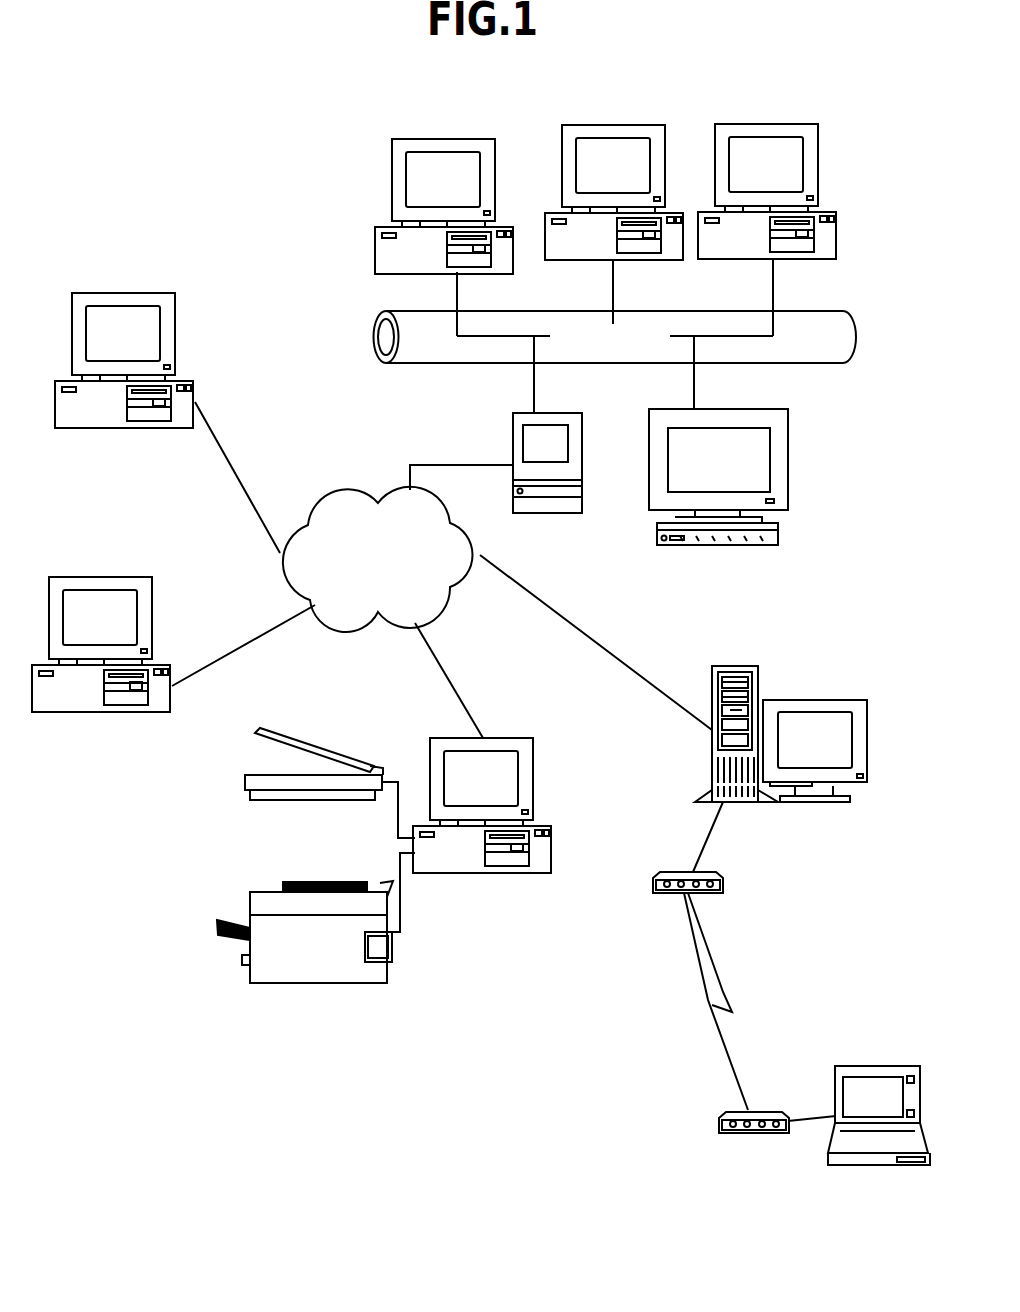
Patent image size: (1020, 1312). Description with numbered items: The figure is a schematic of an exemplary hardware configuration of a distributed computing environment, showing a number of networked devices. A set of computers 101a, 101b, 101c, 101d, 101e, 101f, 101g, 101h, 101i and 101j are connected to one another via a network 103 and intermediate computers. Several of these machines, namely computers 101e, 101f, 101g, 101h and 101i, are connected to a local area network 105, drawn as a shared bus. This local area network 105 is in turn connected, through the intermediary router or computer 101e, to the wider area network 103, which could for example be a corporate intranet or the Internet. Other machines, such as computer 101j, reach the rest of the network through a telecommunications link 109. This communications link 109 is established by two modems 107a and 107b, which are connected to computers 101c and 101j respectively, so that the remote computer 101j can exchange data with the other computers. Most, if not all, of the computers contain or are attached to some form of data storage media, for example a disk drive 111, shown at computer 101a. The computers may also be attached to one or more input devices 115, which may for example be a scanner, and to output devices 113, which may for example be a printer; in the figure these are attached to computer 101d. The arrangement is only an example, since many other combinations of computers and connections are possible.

The computer 101a is at (97, 710).
The computer 101b is at (118, 428).
The computer 101c is at (830, 700).
The computer 101d is at (485, 873).
The intermediary router or computer 101e is at (550, 513).
The computer 101f is at (377, 256).
The computer 101g is at (620, 124).
The computer 101h is at (776, 123).
The computer 101i is at (788, 467).
The computer 101j is at (878, 1165).
The network 103 is at (358, 625).
The local area network 105 is at (805, 362).
The modem 107a is at (725, 880).
The modem 107b is at (718, 1125).
The telecommunications link 109 is at (710, 975).
The disk drive 111 is at (140, 686).
The output device 113 is at (305, 983).
The input device 115 is at (245, 782).